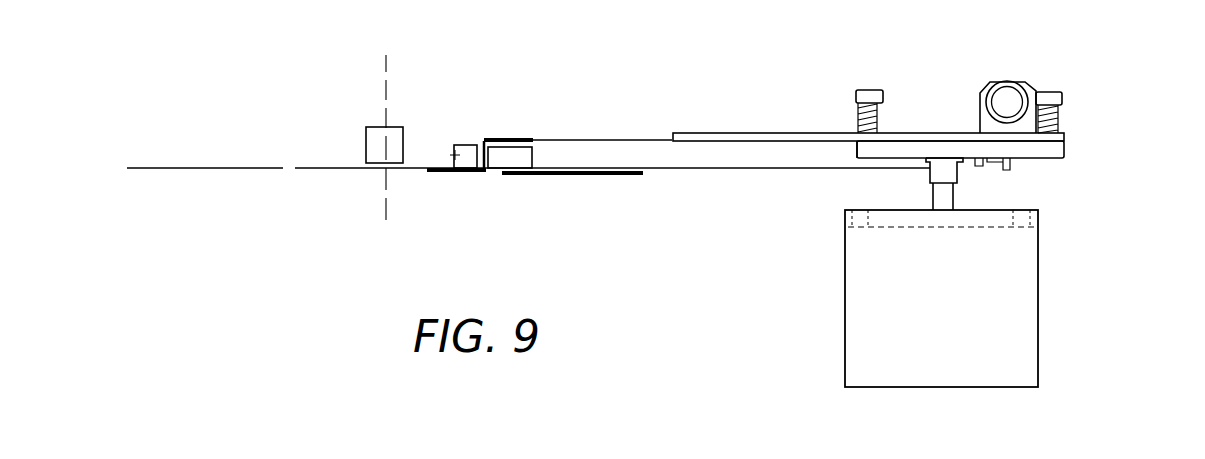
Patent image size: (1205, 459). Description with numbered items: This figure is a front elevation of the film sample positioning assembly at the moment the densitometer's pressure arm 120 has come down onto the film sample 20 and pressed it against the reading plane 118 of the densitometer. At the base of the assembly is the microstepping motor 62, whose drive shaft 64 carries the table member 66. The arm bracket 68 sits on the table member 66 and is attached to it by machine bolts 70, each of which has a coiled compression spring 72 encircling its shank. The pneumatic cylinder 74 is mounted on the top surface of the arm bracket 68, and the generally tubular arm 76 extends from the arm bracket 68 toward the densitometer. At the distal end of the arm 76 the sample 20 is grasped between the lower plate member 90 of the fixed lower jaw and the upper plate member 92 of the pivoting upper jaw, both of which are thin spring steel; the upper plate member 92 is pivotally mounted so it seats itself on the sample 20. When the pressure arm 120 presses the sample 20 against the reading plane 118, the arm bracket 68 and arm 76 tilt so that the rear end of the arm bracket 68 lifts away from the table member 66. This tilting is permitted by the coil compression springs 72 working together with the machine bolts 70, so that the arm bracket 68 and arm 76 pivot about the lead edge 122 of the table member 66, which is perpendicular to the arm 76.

The reading plane 118 is at (213, 170).
The sample 20 is at (345, 167).
The pressure arm 120 is at (393, 127).
The upper plate member 92 is at (438, 160).
The lower plate member 90 is at (445, 172).
The arm 76 is at (662, 169).
The arm bracket 68 is at (755, 133).
The lead edge 122 is at (853, 145).
The table member 66 is at (1055, 147).
The machine bolts 70 is at (870, 90).
The coiled compression spring 72 is at (880, 110).
The pneumatic cylinder 74 is at (1007, 100).
The drive shaft 64 is at (950, 197).
The microstepping motor 62 is at (848, 310).